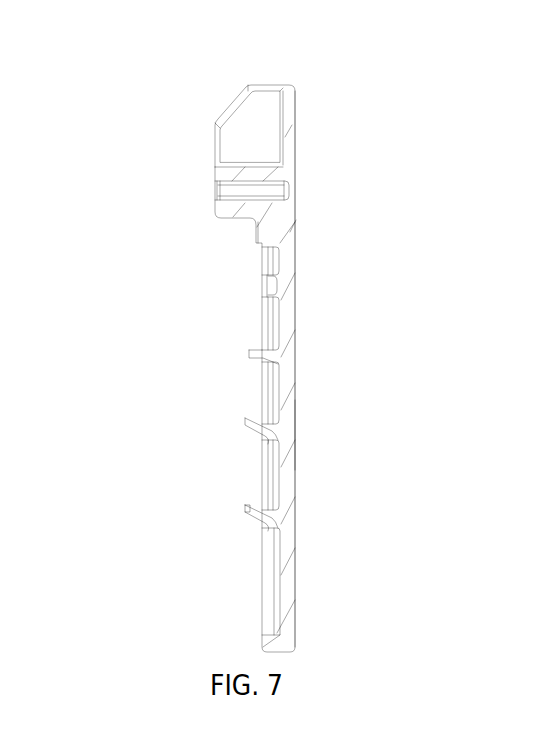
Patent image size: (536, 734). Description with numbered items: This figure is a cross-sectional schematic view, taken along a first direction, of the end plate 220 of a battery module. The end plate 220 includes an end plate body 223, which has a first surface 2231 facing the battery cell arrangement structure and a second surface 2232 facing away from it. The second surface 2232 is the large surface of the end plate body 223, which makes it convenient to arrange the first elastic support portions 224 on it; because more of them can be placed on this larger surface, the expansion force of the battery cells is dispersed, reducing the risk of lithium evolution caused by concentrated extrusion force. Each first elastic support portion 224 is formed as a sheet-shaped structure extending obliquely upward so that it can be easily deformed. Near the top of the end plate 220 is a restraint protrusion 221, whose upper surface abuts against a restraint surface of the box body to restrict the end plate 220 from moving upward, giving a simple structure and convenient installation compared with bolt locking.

The end plate 220 is at (192, 103).
The restraint protrusion 221 is at (260, 352).
The end plate body 223 is at (288, 272).
The first elastic support portion 224 is at (245, 418).
The first surface 2231 is at (295, 433).
The second surface 2232 is at (280, 587).